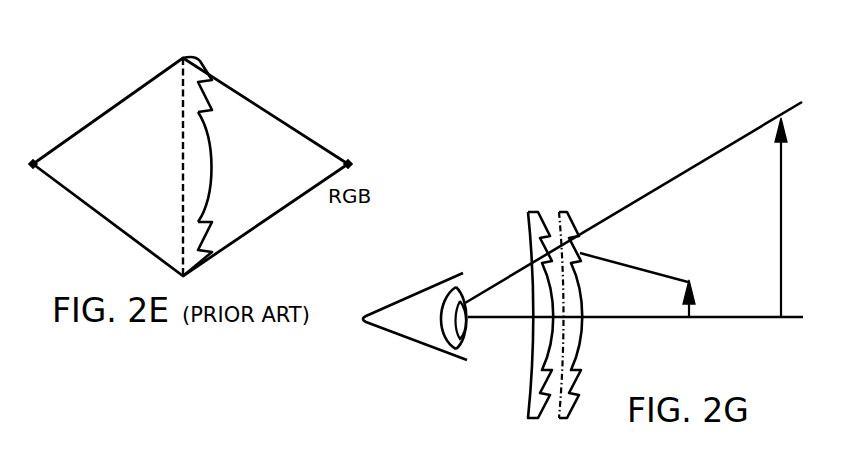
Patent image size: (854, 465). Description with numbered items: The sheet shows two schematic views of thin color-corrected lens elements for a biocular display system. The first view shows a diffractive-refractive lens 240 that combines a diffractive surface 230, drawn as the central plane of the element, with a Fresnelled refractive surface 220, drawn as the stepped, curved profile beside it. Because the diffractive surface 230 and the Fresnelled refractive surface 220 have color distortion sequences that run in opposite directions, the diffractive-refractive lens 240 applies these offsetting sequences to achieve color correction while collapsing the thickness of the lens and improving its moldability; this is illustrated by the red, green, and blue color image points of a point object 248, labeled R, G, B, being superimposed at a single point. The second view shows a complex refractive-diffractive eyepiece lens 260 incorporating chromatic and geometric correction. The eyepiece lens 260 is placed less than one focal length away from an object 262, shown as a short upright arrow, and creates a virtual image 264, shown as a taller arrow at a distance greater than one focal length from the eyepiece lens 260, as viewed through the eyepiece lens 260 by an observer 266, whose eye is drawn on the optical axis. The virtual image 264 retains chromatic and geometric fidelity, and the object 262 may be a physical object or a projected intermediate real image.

In FIG. 2E, the diffractive-refractive lens 240 is at (222, 44).
In FIG. 2E, the diffractive surface 230 is at (182, 100).
In FIG. 2E, the point object 248 is at (33, 163).
In FIG. 2E, the Fresnelled refractive surface 220 is at (207, 125).
In FIG. 2G, the eyepiece lens 260 is at (578, 183).
In FIG. 2G, the observer 266 is at (403, 308).
In FIG. 2G, the virtual image 264 is at (780, 265).
In FIG. 2G, the object 262 is at (692, 312).